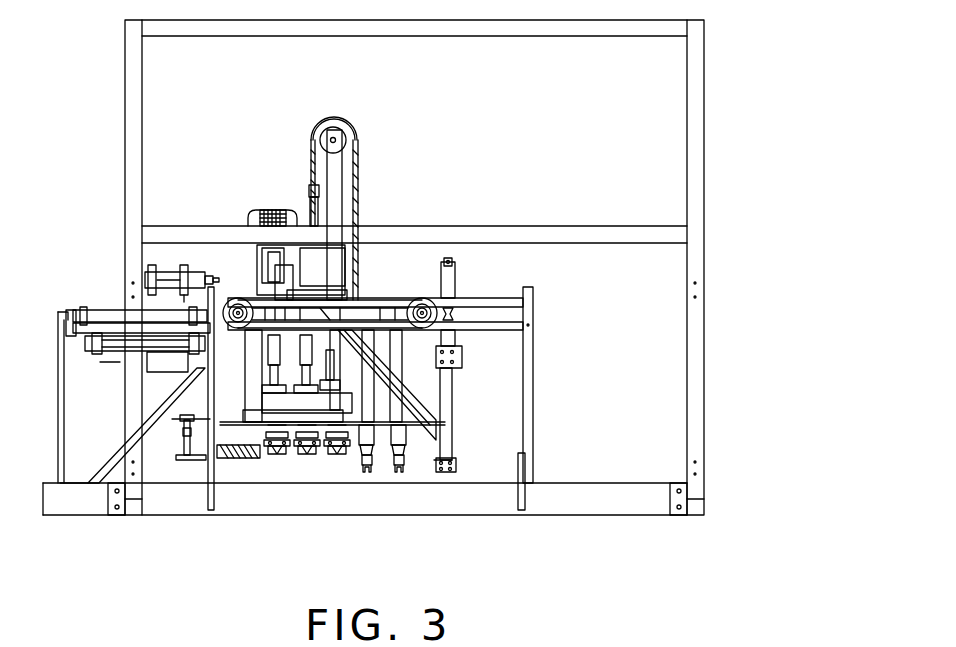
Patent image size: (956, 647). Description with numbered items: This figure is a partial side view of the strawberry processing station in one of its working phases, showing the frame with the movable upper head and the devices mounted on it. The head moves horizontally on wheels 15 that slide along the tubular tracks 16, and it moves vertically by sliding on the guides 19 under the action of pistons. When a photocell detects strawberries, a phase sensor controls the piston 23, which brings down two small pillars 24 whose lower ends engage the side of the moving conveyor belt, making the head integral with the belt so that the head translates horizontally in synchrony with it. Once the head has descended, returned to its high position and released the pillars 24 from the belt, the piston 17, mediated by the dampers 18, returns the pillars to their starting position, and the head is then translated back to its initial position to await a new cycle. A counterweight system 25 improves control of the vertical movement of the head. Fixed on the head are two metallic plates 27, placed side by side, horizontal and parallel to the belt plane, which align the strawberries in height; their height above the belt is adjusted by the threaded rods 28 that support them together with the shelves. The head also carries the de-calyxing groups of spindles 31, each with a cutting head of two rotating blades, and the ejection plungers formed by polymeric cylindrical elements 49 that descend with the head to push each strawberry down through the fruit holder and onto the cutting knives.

The wheels 15 is at (240, 310).
The tubular tracks 16 is at (523, 302).
The piston 17 is at (100, 318).
The dampers 18 is at (142, 275).
The guides 19 is at (373, 320).
The piston 23 is at (457, 273).
The small pillars 24 is at (452, 409).
The counterweight system 25 is at (310, 226).
The metallic plates 27 is at (207, 460).
The threaded rods 28 is at (183, 443).
The spindles 31 is at (332, 432).
The cylindrical elements 49 is at (400, 445).